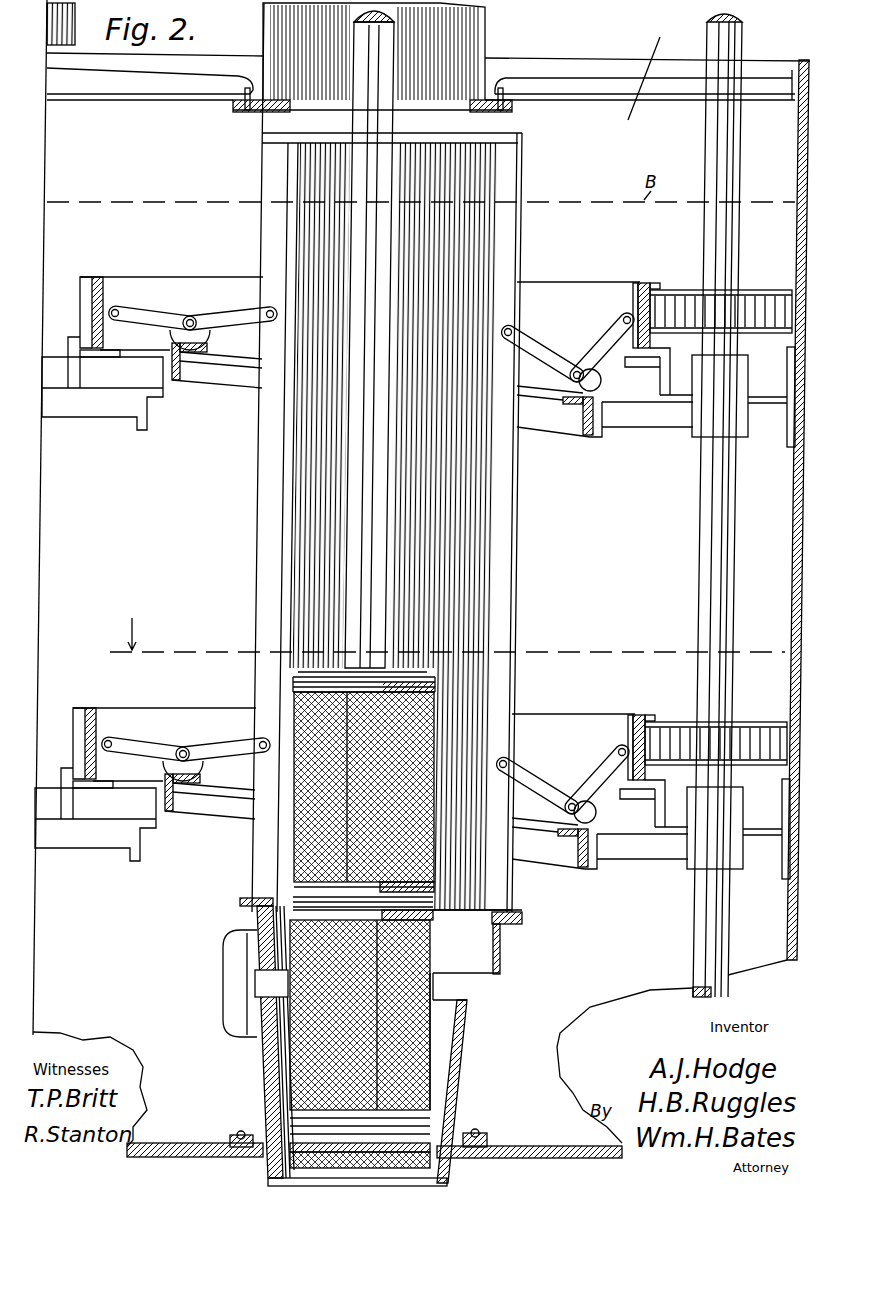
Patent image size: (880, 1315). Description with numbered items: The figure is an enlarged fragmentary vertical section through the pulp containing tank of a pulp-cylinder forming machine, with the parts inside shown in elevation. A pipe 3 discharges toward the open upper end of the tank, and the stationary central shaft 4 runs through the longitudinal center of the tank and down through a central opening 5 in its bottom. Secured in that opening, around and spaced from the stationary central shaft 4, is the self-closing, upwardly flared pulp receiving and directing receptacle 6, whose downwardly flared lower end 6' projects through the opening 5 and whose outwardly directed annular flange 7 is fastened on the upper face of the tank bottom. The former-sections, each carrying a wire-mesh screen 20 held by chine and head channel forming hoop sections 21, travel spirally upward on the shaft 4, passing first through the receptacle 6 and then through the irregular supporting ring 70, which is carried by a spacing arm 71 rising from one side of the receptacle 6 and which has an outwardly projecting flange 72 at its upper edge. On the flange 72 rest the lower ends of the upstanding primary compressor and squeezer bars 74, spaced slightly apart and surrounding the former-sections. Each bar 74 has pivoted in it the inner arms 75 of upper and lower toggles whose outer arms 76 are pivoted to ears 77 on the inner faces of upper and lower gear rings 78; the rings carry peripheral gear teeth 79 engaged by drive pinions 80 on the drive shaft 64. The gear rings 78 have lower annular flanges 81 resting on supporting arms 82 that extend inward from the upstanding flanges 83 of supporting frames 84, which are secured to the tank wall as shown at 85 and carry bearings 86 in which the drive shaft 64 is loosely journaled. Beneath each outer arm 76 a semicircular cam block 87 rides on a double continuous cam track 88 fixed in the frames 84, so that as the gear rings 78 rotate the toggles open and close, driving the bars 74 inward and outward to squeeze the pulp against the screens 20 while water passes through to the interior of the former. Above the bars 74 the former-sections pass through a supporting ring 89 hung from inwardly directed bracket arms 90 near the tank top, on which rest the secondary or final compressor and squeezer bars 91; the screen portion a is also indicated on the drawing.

The pipe 3 is at (63, 31).
The stationary central shaft 4 is at (440, 128).
The central opening 5 is at (460, 1140).
The pulp receiving and directing receptacle 6 is at (342, 1046).
The downwardly flared lower end 6' is at (383, 1166).
The annular flange 7 is at (483, 1138).
The screen 20 is at (316, 836).
The chine and head channel forming hoop sections 21 is at (293, 686).
The drive shaft 64 is at (707, 510).
The irregular supporting ring 70 is at (498, 958).
The spacing arm 71 is at (233, 965).
The flange 72 is at (245, 903).
The primary compressor and squeezer bars 74 is at (300, 481).
The inner arms 75 is at (216, 317).
The outer arms 76 is at (135, 311).
The ears 77 is at (634, 320).
The gear rings 78 is at (172, 290).
The peripheral gear teeth 79 is at (87, 283).
The drive pinions 80 is at (753, 300).
The lower annular flanges 81 is at (88, 357).
The supporting arms 82 is at (107, 354).
The upstanding flanges 83 is at (73, 340).
The supporting frames 84 is at (120, 390).
The securing point 85 is at (790, 433).
The bearings 86 is at (703, 413).
The semicircular cam block 87 is at (197, 338).
The double continuous cam tracks 88 is at (182, 353).
The supporting ring 89 is at (247, 113).
The bracket arms 90 is at (585, 88).
The secondary or final compressor and squeezer bars 91 is at (440, 46).
The screen portion a is at (300, 868).